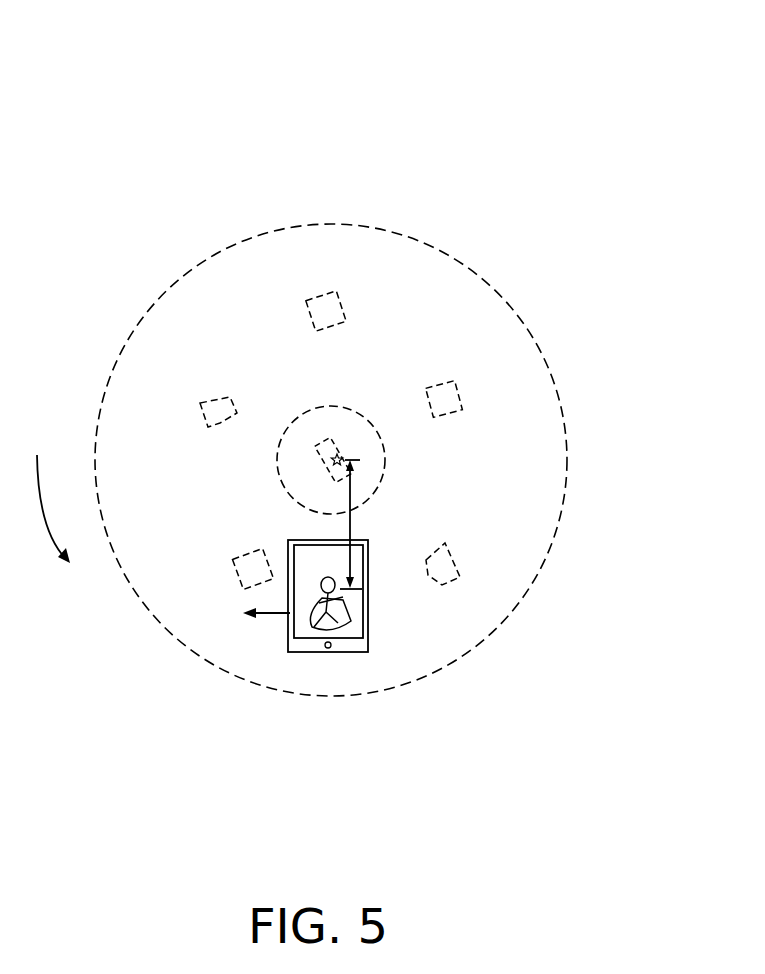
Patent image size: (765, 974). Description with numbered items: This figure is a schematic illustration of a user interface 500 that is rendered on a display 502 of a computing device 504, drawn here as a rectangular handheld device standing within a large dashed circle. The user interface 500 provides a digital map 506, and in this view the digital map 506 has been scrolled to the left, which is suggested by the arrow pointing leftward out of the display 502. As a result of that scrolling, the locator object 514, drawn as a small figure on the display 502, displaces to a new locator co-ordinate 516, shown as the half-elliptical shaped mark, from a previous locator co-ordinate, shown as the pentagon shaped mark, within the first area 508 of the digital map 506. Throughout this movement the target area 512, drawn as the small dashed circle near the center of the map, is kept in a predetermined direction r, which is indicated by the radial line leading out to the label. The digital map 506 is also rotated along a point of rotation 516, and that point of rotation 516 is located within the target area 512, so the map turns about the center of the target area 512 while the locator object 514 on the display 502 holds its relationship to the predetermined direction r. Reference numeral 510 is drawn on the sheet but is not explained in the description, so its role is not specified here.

The user interface 500 is at (586, 83).
The display 502 is at (249, 661).
The computing device 504 is at (275, 648).
The digital map 506 is at (351, 708).
The first area 508 is at (331, 440).
The distance indicator 510 is at (458, 609).
The target area 512 is at (447, 326).
The locator object 514 is at (308, 675).
The point of rotation 516 is at (467, 371).
The predetermined direction r is at (500, 540).